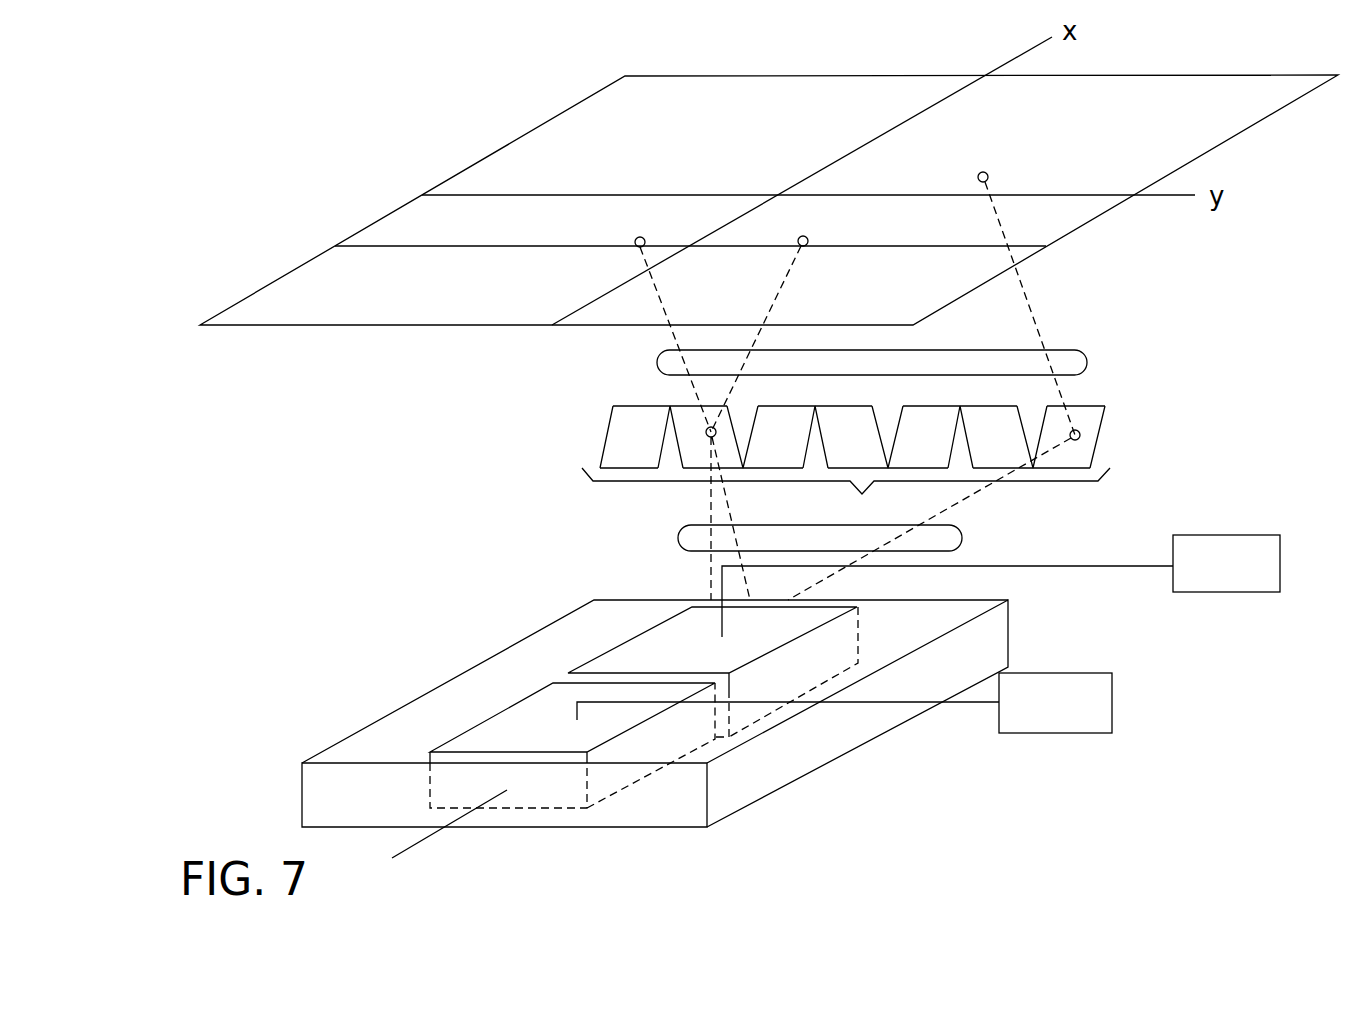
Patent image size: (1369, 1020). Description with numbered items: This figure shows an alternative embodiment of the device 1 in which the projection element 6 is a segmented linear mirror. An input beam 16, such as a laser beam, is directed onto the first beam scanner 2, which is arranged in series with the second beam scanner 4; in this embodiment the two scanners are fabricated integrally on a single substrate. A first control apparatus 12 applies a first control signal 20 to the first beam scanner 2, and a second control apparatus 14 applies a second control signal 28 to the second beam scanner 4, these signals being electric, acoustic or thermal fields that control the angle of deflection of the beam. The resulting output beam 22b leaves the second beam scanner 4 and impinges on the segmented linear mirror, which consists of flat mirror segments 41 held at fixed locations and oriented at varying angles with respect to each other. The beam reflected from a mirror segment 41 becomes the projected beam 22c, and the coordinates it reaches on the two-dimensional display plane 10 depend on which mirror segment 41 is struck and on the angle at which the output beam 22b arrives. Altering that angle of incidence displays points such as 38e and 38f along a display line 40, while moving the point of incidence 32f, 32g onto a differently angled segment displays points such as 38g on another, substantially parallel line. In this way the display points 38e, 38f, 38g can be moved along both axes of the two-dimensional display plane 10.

The device 1 is at (355, 536).
The first beam scanner 2 is at (630, 730).
The second beam scanner 4 is at (820, 627).
The projection element 6 is at (846, 494).
The two-dimensional display plane 10 is at (738, 75).
The first control apparatus 12 is at (1071, 717).
The second control apparatus 14 is at (1243, 578).
The input beam 16 is at (433, 837).
The first control signal 20 is at (863, 702).
The output beam 22b is at (678, 536).
The projected beam 22c is at (1087, 362).
The second control signal 28 is at (1032, 565).
The point of incidence 32f is at (706, 434).
The point of incidence 32g is at (1080, 440).
The display point 38e is at (634, 244).
The display point 38f is at (808, 245).
The display point 38g is at (988, 175).
The display line 40 is at (437, 247).
The mirror segment 41 is at (700, 469).